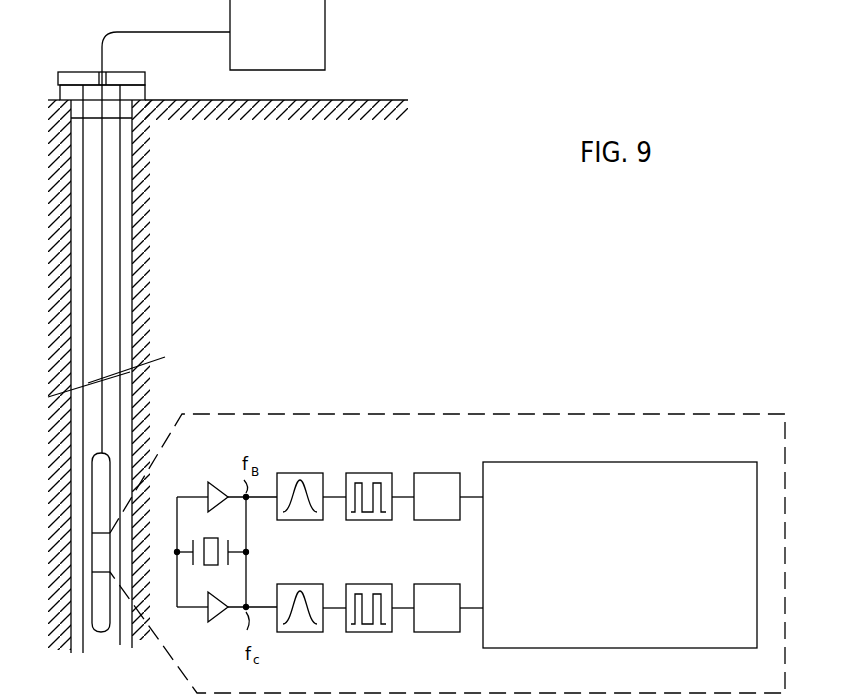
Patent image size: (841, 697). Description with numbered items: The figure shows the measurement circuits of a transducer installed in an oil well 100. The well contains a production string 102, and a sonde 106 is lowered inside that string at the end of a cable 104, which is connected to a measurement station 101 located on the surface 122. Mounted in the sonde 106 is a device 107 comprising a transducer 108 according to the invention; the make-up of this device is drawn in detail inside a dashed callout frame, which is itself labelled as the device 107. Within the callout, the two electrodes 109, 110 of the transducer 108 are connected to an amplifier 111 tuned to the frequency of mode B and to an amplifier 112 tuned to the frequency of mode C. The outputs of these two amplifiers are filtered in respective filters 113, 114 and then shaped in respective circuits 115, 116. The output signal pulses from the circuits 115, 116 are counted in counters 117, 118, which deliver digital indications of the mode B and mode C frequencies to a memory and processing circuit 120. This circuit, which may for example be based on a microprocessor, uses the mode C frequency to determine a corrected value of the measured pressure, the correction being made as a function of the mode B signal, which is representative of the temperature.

The oil well 100 is at (126, 178).
The measurement station 101 is at (326, 39).
The production string 102 is at (121, 215).
The cable 104 is at (103, 275).
The sonde 106 is at (100, 497).
The device 107 is at (100, 552).
The transducer 108 is at (222, 571).
The electrode 109 is at (193, 545).
The electrode 110 is at (232, 546).
The amplifier 111 is at (218, 481).
The amplifier 112 is at (218, 625).
The filter 113 is at (289, 472).
The filter 114 is at (297, 634).
The shaping circuit 115 is at (358, 472).
The shaping circuit 116 is at (366, 634).
The counter 117 is at (427, 472).
The counter 118 is at (440, 634).
The memory and processing circuit 120 is at (635, 462).
The surface 122 is at (392, 100).